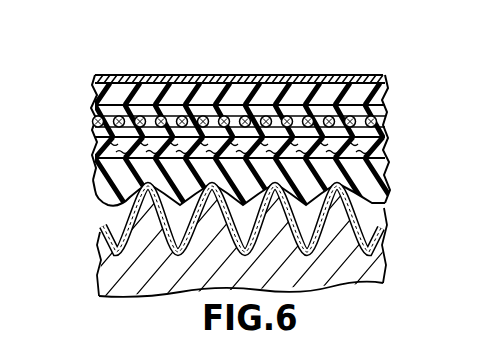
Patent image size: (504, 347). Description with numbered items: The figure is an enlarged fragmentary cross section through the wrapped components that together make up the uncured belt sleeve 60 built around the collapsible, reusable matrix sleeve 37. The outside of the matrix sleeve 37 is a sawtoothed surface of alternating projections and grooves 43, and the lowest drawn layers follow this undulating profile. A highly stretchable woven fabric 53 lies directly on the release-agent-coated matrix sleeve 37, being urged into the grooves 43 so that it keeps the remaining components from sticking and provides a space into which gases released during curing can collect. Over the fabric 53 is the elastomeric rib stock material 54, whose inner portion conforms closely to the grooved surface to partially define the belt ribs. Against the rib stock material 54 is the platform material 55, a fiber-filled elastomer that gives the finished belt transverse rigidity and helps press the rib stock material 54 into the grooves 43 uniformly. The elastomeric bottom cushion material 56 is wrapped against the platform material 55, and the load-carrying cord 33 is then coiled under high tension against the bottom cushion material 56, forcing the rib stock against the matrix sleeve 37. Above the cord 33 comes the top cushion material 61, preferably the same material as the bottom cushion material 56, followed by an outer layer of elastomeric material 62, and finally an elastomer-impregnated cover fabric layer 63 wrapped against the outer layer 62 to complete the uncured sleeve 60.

The load-carrying cord 33 is at (95, 98).
The matrix sleeve 37 is at (142, 298).
The grooves 43 is at (241, 249).
The stretchable woven cloth fabric 53 is at (358, 222).
The rib stock material 54 is at (96, 178).
The platform material 55 is at (94, 145).
The bottom cushion material 56 is at (383, 125).
The uncured belt sleeve 60 is at (401, 79).
The top cushion material 61 is at (385, 110).
The outer layer of elastomeric material 62 is at (298, 92).
The fabric layer 63 is at (163, 80).